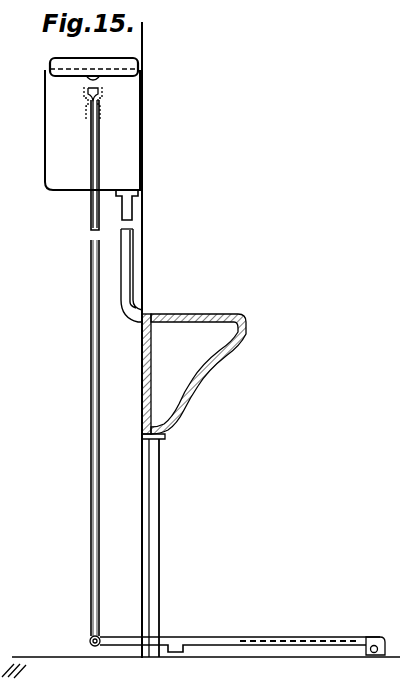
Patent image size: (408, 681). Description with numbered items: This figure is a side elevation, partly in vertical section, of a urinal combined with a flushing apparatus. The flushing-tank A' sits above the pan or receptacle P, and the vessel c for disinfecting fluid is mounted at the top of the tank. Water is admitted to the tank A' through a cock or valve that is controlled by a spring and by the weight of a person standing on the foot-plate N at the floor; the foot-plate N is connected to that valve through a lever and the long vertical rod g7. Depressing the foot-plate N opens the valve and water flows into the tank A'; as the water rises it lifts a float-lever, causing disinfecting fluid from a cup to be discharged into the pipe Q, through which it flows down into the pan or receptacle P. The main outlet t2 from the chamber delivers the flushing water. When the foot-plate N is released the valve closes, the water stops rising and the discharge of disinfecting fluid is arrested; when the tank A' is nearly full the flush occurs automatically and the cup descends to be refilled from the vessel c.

The flushing-tank A' is at (92, 130).
The vessel c is at (94, 69).
The pipe Q is at (91, 152).
The main outlet t2 is at (130, 260).
The pan or receptacle P is at (194, 485).
The rod g7 is at (92, 396).
The foot-plate N is at (282, 636).